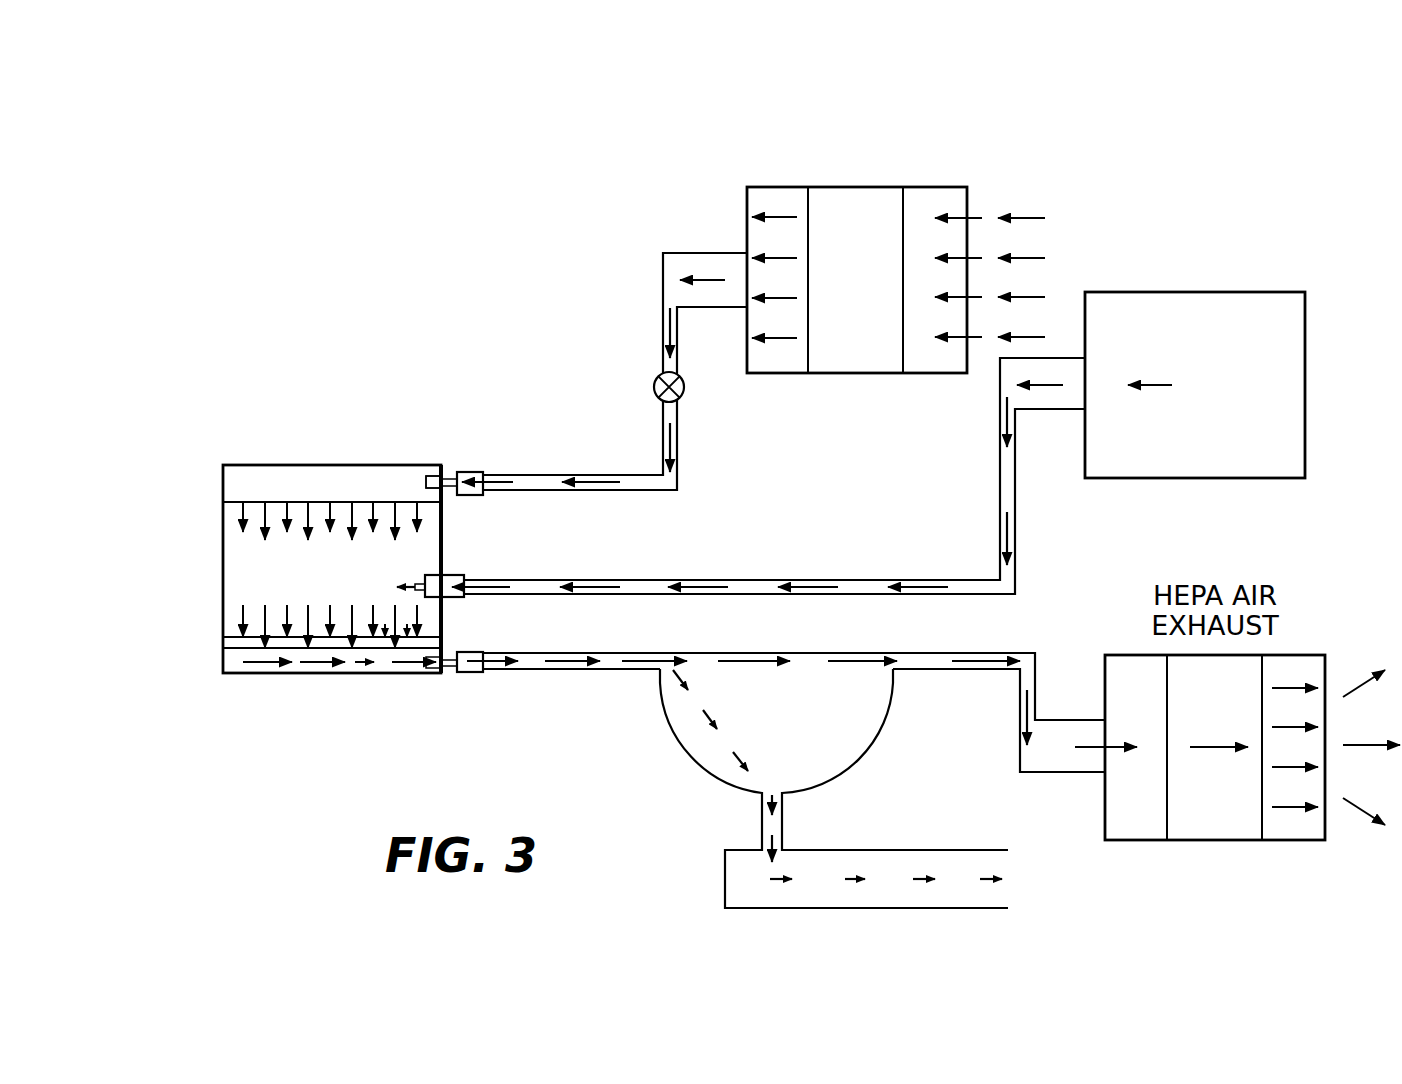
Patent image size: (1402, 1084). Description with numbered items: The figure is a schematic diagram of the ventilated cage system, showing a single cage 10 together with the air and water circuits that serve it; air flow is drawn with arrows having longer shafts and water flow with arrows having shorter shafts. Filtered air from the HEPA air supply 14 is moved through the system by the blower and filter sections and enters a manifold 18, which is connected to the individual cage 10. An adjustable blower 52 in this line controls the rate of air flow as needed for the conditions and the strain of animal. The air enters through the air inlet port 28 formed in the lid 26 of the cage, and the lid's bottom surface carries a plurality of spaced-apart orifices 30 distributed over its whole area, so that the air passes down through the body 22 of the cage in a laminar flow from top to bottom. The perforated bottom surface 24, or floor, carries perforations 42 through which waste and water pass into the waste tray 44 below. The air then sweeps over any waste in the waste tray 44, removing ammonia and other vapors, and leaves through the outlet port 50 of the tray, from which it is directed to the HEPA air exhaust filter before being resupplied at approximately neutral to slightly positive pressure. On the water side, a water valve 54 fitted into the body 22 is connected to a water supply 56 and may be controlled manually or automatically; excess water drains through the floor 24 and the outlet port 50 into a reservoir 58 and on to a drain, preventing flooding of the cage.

The cage 10 is at (196, 516).
The air supply 14 is at (791, 147).
The manifold 18 is at (686, 253).
The body 22 is at (222, 572).
The bottom surface 24 is at (257, 636).
The lid 26 is at (237, 478).
The air inlet port 28 is at (418, 473).
The orifices 30 is at (290, 512).
The perforations 42 is at (235, 630).
The waste tray 44 is at (357, 675).
The outlet port 50 is at (427, 676).
The adjustable blower 52 is at (654, 386).
The water valve 54 is at (453, 575).
The water supply 56 is at (1298, 325).
The reservoir 58 is at (697, 762).